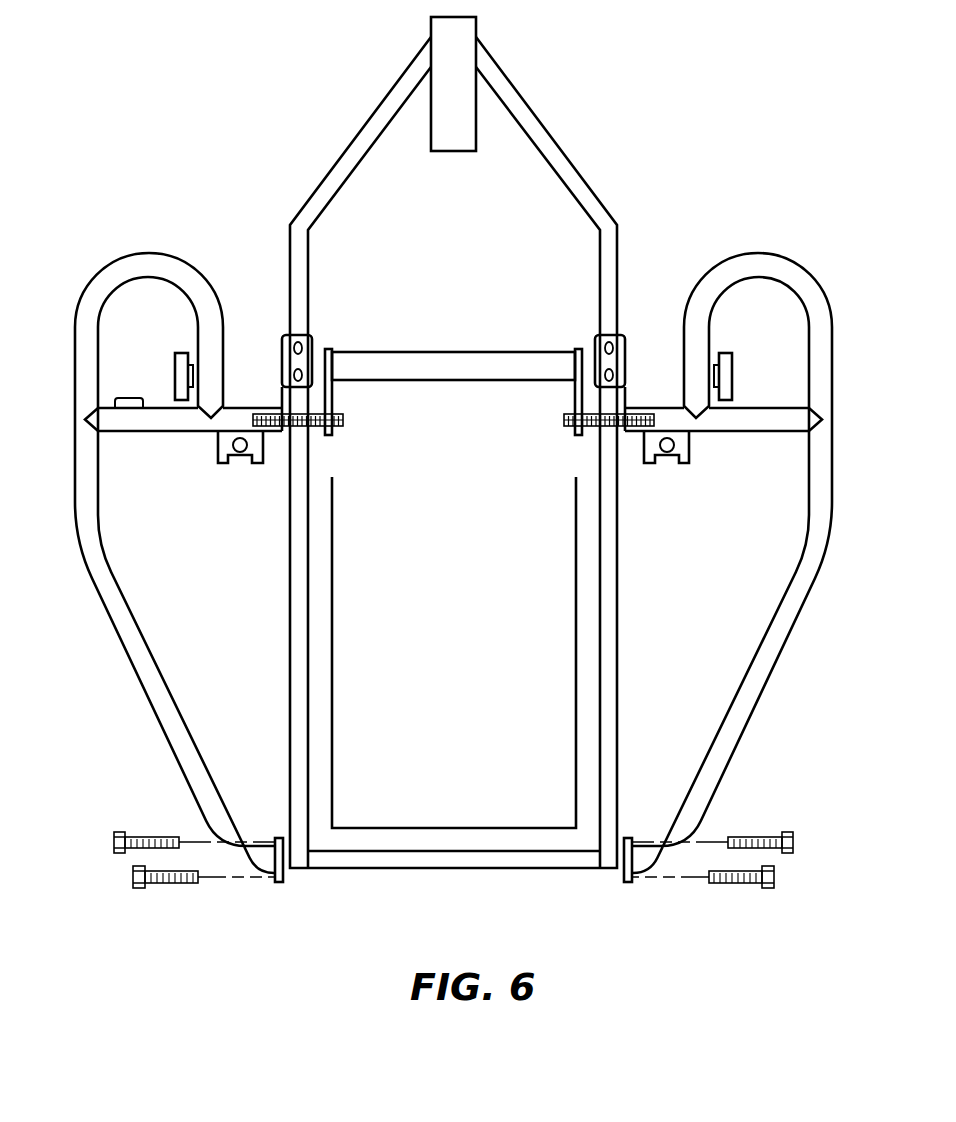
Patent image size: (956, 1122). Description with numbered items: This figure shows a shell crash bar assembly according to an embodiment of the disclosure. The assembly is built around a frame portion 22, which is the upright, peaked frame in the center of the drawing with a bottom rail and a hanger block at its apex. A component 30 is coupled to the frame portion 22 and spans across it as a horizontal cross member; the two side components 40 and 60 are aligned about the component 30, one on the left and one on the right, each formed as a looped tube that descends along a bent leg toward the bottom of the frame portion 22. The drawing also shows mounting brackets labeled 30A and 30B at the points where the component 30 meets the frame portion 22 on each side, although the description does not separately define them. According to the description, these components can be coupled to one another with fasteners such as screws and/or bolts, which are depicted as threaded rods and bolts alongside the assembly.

The frame portion 22 is at (543, 118).
The component 30 is at (435, 352).
The left mounting bracket 30A is at (280, 348).
The right mounting bracket 30B is at (627, 348).
The component 40 is at (105, 240).
The component 60 is at (802, 240).